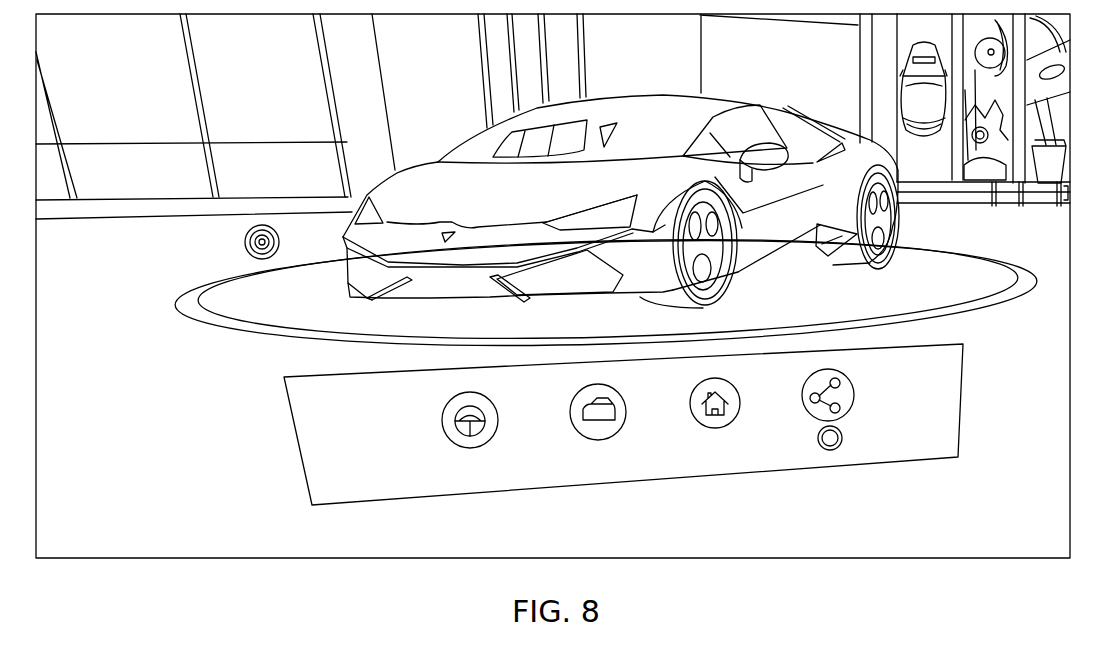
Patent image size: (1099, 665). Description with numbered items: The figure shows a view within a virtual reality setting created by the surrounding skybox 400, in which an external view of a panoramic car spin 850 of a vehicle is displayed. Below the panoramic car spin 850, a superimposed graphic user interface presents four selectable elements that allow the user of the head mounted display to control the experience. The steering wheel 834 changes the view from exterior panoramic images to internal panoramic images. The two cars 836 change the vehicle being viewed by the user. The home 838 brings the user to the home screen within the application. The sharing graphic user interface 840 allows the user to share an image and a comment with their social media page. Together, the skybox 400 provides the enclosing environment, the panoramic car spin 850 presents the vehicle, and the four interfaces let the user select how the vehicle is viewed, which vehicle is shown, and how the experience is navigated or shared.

The skybox 400 is at (149, 98).
The panoramic car spin 850 is at (466, 122).
The steering wheel 834 is at (443, 432).
The two cars 836 is at (573, 432).
The home 838 is at (738, 425).
The sharing graphic user interface 840 is at (855, 403).